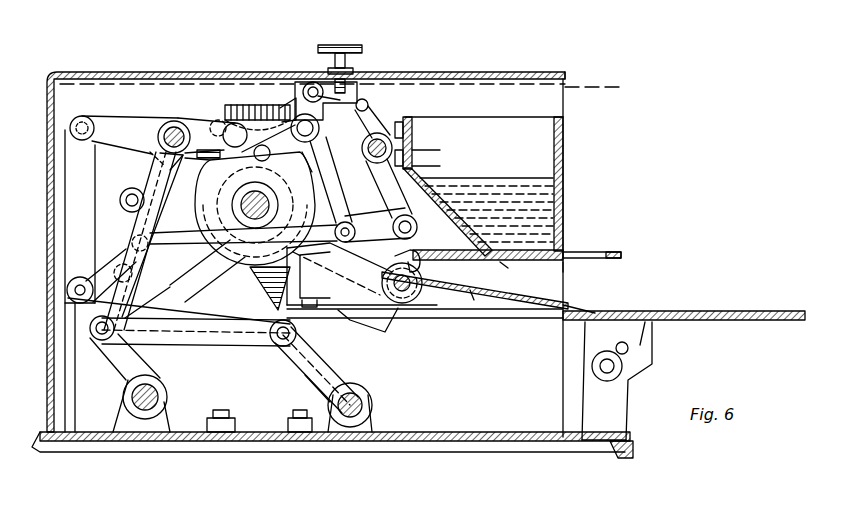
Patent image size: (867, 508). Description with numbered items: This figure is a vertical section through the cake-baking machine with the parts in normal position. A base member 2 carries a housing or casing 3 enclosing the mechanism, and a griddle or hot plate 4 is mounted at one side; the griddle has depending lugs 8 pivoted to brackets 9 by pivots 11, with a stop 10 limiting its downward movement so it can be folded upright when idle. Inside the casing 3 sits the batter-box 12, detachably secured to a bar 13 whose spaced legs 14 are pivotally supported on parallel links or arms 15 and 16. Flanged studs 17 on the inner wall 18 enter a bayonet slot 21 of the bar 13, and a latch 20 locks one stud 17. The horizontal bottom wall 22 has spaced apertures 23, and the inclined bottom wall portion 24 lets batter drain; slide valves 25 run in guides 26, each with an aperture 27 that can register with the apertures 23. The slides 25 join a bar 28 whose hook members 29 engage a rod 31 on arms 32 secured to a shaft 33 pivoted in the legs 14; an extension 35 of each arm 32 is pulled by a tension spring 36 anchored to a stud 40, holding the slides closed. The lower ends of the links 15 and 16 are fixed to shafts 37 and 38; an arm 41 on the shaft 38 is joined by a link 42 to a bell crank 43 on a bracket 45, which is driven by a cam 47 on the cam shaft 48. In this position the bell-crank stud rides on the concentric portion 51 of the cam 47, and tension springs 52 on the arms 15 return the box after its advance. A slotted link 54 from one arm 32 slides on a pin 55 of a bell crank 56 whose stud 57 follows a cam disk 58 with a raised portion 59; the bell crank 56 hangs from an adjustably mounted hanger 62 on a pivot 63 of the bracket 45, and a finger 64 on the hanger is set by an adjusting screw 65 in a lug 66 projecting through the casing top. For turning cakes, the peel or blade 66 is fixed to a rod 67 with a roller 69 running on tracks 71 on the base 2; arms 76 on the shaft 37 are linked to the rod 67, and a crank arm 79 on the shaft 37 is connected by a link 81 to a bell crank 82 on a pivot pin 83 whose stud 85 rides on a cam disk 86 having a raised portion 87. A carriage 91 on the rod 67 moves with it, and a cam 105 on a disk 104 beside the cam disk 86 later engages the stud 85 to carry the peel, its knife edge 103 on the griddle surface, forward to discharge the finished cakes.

The base member 2 is at (40, 80).
The housing or casing 3 is at (536, 74).
The griddle or hot plate 4 is at (728, 313).
The depending lugs 8 is at (652, 342).
The brackets 9 is at (612, 418).
The stop 10 is at (646, 321).
The pivots 11 is at (612, 372).
The batter-box 12 is at (566, 160).
The supporting bar 13 is at (412, 118).
The spaced legs 14 is at (112, 118).
The parallel link or arm 15 is at (350, 366).
The parallel link or arm 16 is at (72, 200).
The flanged studs 17 is at (420, 166).
The inner wall 18 is at (414, 150).
The latch 20 is at (400, 120).
The bayonet slot 21 is at (412, 158).
The horizontal bottom wall 22 is at (476, 292).
The spaced apertures 23 is at (506, 260).
The inclined bottom wall portion 24 is at (440, 215).
The slide valves 25 is at (617, 253).
The guides 26 is at (566, 270).
The aperture 27 is at (592, 252).
The bar 28 is at (458, 261).
The hook members 29 is at (404, 259).
The rod 31 is at (475, 288).
The arms 32 is at (381, 218).
The shaft 33 is at (389, 188).
The extension 35 is at (366, 100).
The tension spring 36 is at (262, 140).
The shaft 37 is at (365, 407).
The shaft 38 is at (136, 396).
The studs 40 is at (212, 125).
The arm 41 is at (116, 374).
The link 42 is at (100, 272).
The bell crank 43 is at (152, 150).
The bracket 45 is at (369, 104).
The cam 47 is at (284, 108).
The cam shaft 48 is at (232, 252).
The concentric portion 51 is at (330, 198).
The tension springs 52 is at (126, 310).
The slotted link 54 is at (362, 275).
The pin 55 is at (356, 233).
The bell crank 56 is at (320, 128).
The pin or stud 57 is at (250, 118).
The cam disk 58 is at (243, 208).
The raised portion 59 is at (367, 148).
The adjustably mounted hanger 62 is at (318, 92).
The pivot 63 is at (313, 82).
The finger 64 is at (350, 92).
The adjusting screw 65 is at (352, 46).
The lug; peel or blade 66 is at (352, 76).
The rod 67 is at (407, 288).
The roller 69 is at (420, 296).
The tracks 71 is at (377, 315).
The arms 76 is at (188, 280).
The crank arm 79 is at (302, 380).
The link 81 is at (208, 348).
The bell crank 82 is at (150, 166).
The pivot pin 83 is at (172, 126).
The stud 85 is at (218, 120).
The cam disk 86 is at (198, 175).
The raised portion 87 is at (272, 288).
The carriage 91 is at (372, 292).
The knife edge 103 is at (590, 312).
The disk 104 is at (226, 286).
The cam 105 is at (136, 190).